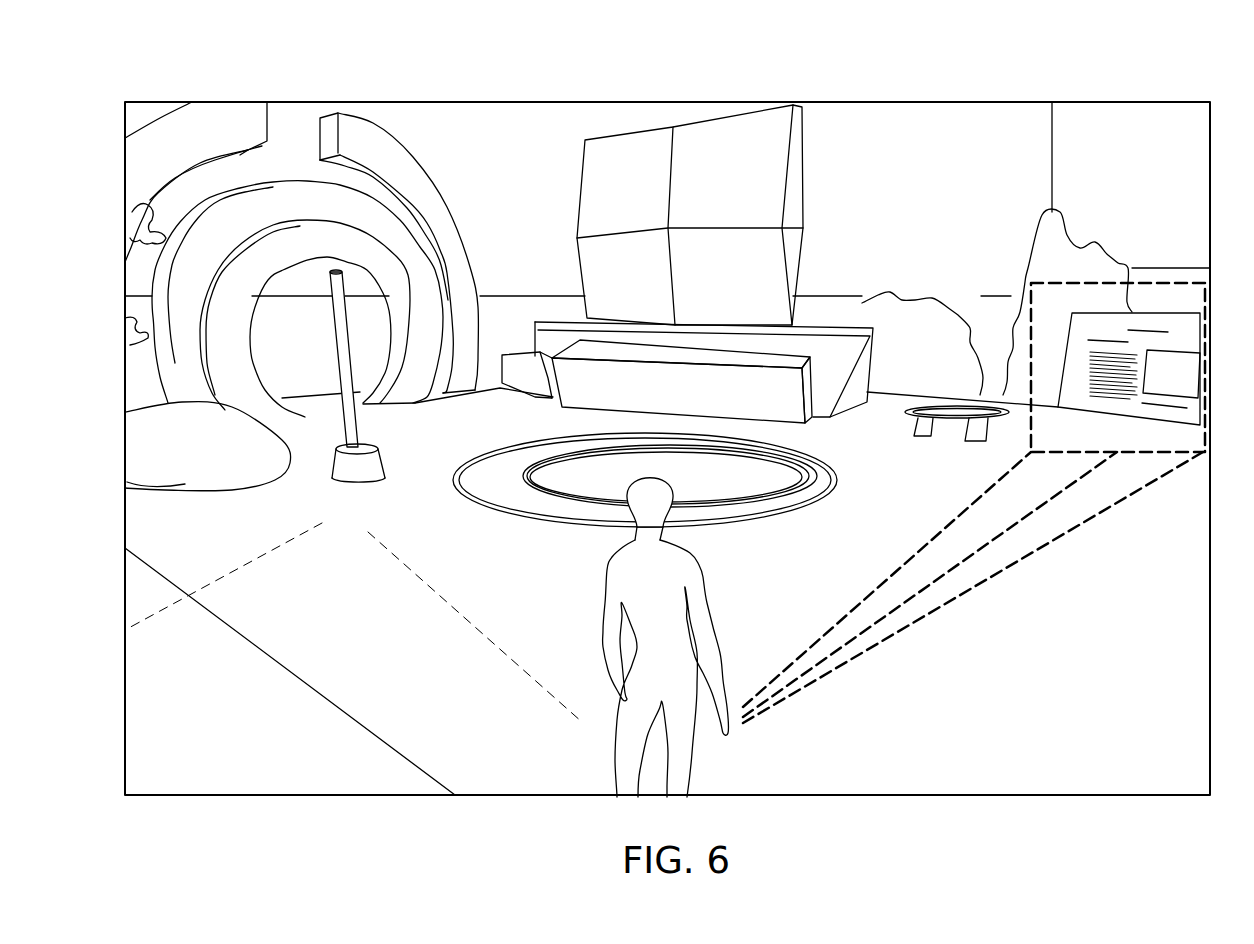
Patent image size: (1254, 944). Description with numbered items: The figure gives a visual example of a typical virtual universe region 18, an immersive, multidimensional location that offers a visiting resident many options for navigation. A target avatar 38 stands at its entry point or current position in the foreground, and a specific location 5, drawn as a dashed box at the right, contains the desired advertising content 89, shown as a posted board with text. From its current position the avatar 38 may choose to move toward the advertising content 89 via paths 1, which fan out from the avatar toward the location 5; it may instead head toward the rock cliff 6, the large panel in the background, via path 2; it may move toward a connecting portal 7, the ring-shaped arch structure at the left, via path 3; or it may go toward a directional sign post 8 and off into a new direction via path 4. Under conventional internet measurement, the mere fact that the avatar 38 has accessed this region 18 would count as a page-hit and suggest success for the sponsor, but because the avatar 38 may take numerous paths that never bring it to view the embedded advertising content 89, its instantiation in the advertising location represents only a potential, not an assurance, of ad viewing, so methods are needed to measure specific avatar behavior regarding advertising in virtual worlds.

The virtual region 18 is at (667, 407).
The paths toward advertising content 1 is at (973, 587).
The path toward rock cliff 2 is at (635, 340).
The path toward connecting portal 3 is at (388, 372).
The path toward directional sign post 4 is at (353, 583).
The specific location 5 is at (1118, 344).
The rock cliff 6 is at (690, 215).
The connecting portal 7 is at (301, 259).
The directional sign post 8 is at (332, 358).
The avatar 38 is at (700, 578).
The advertising content 89 is at (1143, 322).